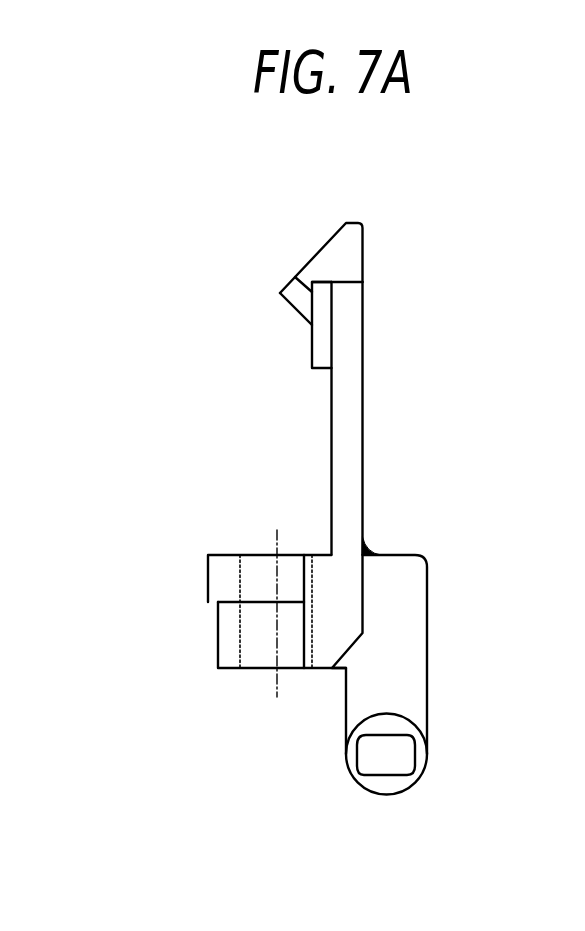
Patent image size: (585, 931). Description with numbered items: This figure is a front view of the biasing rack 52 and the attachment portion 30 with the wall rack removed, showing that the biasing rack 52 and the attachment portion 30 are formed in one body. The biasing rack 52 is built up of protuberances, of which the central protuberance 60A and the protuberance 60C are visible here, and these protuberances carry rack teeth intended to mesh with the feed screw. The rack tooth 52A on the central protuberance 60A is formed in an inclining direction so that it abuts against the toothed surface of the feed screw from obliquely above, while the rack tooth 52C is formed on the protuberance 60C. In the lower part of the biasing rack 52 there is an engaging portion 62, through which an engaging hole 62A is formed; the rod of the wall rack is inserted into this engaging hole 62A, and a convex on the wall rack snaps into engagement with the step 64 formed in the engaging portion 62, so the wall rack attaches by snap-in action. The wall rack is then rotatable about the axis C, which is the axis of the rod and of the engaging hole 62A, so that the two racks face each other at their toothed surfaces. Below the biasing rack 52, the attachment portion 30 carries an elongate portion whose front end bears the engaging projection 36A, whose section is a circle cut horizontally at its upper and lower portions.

The biasing rack 52 is at (347, 456).
The central protuberance 60A is at (342, 248).
The protuberance 60C is at (352, 317).
The rack tooth 52A is at (291, 297).
The rack tooth 52C is at (318, 349).
The engaging portion 62 is at (224, 644).
The step 64 is at (210, 605).
The engaging hole 62A is at (239, 643).
The axis C is at (276, 629).
The attachment portion 30 is at (443, 715).
The engaging projection 36A is at (388, 753).